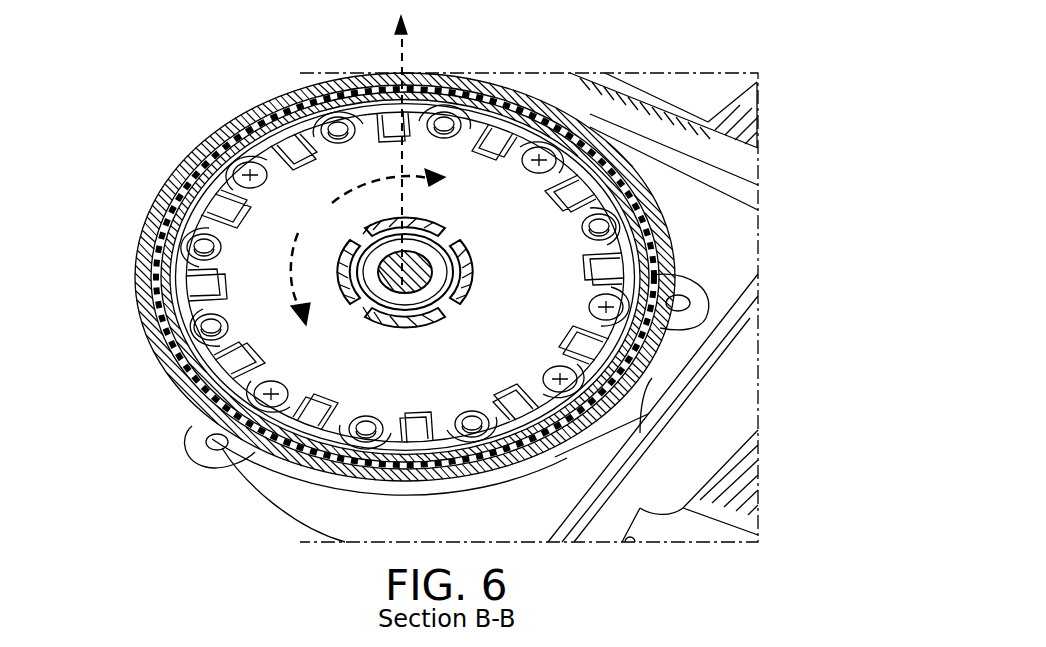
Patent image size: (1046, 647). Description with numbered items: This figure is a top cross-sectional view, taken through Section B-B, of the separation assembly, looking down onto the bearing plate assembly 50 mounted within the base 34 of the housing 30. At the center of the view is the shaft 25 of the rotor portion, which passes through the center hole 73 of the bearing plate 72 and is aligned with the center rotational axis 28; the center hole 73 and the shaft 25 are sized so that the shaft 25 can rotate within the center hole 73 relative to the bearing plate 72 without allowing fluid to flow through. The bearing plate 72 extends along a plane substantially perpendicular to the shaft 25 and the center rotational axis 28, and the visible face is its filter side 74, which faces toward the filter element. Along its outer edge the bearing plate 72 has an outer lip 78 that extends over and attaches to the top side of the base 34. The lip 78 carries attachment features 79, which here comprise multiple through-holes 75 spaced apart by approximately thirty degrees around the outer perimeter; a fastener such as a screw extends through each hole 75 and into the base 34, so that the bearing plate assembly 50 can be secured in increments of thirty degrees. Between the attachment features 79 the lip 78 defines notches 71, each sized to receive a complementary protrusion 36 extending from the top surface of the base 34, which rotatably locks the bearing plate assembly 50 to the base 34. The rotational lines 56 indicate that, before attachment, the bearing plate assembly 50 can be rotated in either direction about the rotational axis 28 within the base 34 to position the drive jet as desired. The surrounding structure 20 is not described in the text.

The housing assembly 20 is at (773, 104).
The shaft 25 is at (411, 256).
The center rotational axis 28 is at (407, 57).
The housing 30 is at (298, 525).
The base 34 is at (263, 499).
The protrusion 36 is at (245, 211).
The bearing plate assembly 50 is at (636, 221).
The rotational lines 56 is at (332, 204).
The notch 71 is at (232, 330).
The bearing plate 72 is at (590, 340).
The center hole 73 is at (441, 272).
The filter side 74 is at (567, 270).
The through-hole 75 is at (210, 331).
The outer lip 78 is at (660, 323).
The attachment feature 79 is at (123, 423).